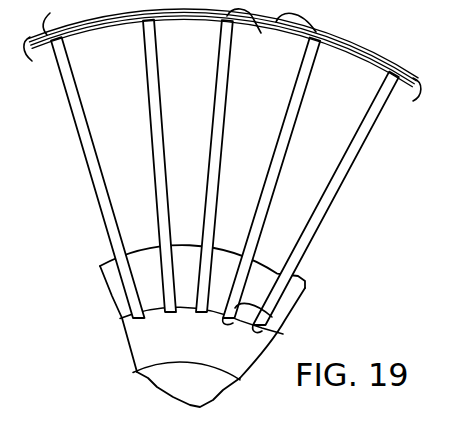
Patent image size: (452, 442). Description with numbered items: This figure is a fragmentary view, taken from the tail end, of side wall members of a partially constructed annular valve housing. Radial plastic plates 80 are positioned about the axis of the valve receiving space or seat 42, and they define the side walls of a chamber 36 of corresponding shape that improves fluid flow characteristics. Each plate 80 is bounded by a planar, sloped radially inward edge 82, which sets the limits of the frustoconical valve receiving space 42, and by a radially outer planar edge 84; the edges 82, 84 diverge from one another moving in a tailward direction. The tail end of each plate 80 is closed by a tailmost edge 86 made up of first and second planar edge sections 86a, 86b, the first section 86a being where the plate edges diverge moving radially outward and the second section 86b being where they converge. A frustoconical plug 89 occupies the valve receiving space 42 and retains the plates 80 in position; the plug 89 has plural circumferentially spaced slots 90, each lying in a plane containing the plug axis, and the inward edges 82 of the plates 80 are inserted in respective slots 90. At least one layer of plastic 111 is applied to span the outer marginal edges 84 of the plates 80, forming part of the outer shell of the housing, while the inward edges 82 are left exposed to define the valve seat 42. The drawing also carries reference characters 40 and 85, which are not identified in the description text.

The chamber 36 is at (127, 148).
The hub region 40 is at (185, 323).
The valve receiving space 42 is at (222, 431).
The plate 80 is at (86, 161).
The radially inward edge 82 is at (143, 318).
The radially outer planar edge 84 is at (137, 11).
The inner mounting body 85 is at (100, 265).
The tailmost edge 86 is at (155, 183).
The first planar edge section 86a is at (295, 271).
The second planar edge section 86b is at (350, 167).
The frustoconical plug 89 is at (147, 381).
The slot 90 is at (283, 324).
The layer of plastic 111 is at (170, 10).